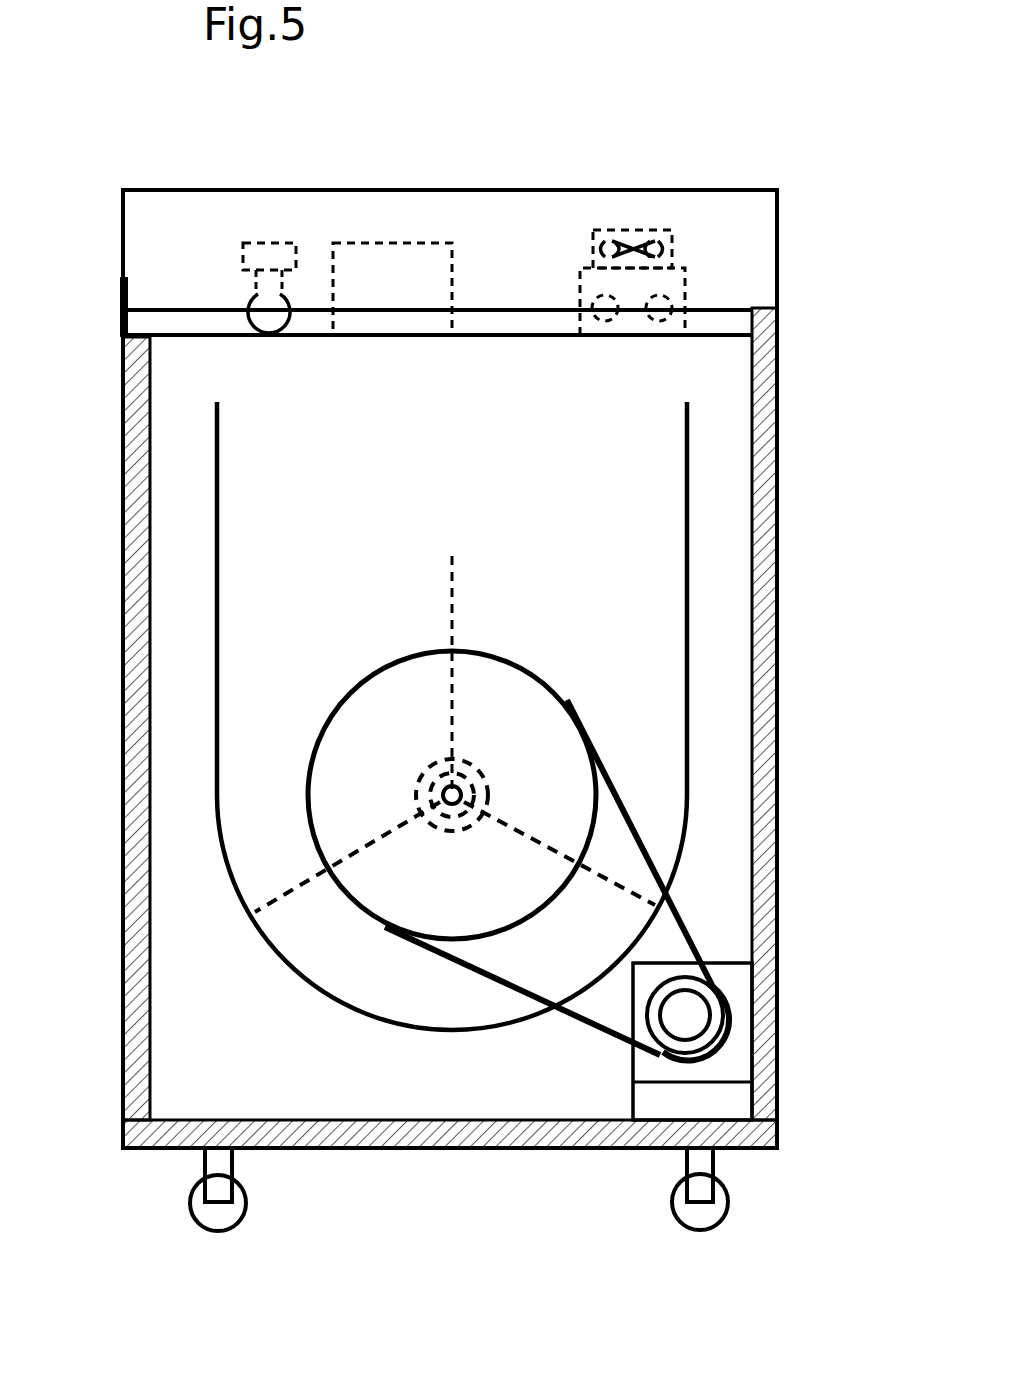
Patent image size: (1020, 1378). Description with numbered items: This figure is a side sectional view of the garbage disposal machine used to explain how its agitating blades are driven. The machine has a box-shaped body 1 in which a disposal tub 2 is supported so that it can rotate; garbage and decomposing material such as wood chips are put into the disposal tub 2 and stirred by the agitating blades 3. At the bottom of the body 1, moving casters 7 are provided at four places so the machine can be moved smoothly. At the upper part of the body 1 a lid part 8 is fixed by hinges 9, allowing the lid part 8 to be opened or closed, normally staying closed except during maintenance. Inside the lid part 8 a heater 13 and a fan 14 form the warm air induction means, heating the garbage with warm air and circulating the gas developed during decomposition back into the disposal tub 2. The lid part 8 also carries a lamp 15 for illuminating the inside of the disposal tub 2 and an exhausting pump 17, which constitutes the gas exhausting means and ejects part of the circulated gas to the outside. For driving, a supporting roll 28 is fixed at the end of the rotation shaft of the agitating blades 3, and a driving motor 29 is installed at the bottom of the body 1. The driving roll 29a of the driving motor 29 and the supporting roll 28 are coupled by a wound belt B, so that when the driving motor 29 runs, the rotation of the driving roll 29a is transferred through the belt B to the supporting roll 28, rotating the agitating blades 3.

The body 1 is at (778, 641).
The disposal tub 2 is at (318, 994).
The agitating blades 3 is at (450, 626).
The moving casters 7 is at (712, 1225).
The lid part 8 is at (540, 188).
The hinges 9 is at (120, 323).
The heater 13 is at (580, 280).
The fan 14 is at (593, 230).
The lamp 15 is at (243, 258).
The exhausting pump 17 is at (388, 241).
The supporting roll 28 is at (490, 688).
The driving motor 29 is at (725, 1053).
The driving roll 29a is at (655, 1046).
The belt B is at (685, 927).